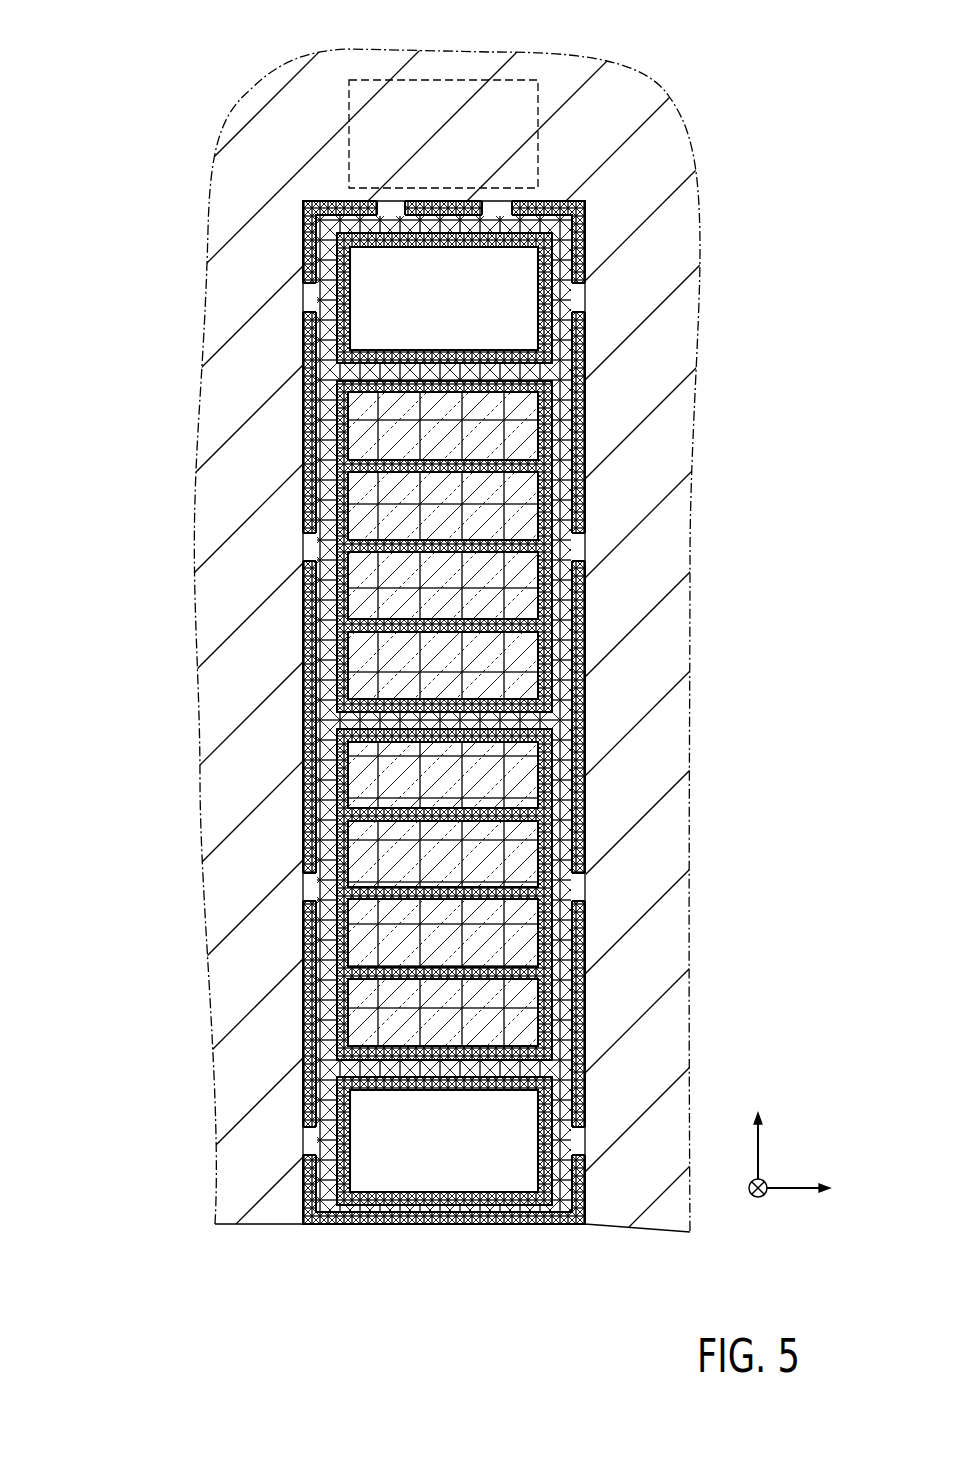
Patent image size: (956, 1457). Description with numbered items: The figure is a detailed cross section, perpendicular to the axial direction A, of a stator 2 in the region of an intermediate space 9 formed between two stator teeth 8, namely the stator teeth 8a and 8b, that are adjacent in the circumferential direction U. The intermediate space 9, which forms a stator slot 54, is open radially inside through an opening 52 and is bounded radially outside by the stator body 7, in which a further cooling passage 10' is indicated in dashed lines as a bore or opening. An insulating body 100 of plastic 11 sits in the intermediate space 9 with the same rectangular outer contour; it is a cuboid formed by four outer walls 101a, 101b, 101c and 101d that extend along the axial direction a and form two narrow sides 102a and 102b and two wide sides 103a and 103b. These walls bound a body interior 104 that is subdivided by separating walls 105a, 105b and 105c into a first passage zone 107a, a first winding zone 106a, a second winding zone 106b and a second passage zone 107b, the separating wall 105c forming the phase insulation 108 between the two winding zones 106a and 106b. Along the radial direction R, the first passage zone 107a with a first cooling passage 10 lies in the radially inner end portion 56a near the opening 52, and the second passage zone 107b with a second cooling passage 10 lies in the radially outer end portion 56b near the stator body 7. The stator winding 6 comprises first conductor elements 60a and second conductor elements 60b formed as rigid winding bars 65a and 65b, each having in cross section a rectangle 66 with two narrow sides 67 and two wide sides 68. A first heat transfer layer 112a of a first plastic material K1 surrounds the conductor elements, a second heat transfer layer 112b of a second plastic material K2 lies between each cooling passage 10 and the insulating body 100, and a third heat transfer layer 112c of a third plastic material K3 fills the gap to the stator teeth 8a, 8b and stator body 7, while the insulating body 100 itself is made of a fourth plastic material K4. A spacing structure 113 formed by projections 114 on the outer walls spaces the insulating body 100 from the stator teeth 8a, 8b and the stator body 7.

The stator 2 is at (656, 128).
The stator body 7 is at (519, 638).
The further cooling passage 10' is at (443, 96).
The cooling passage 10 is at (444, 719).
The stator winding 6 is at (484, 380).
The stator teeth 8 is at (446, 640).
The stator tooth 8a is at (446, 640).
The stator tooth 8b is at (196, 647).
The intermediate space 9 is at (452, 1293).
The stator slot 54 is at (345, 1238).
The opening 52 is at (395, 1226).
The radially inner end portion 56a is at (262, 1181).
The radially outer end portion 56b is at (262, 250).
The first conductor elements 60a is at (444, 894).
The winding bar 65a is at (486, 789).
The second conductor elements 60b is at (444, 546).
The winding bar 65b is at (486, 439).
The rectangle 66 is at (560, 406).
The narrow sides 67 is at (303, 424).
The wide sides 68 is at (398, 358).
The insulating body 100 is at (469, 781).
The plastic 11 is at (469, 781).
The fourth plastic material K4 is at (533, 1236).
The third plastic material K3 is at (303, 207).
The second plastic material K2 is at (303, 325).
The first plastic material K1 is at (303, 580).
The outer wall 101a is at (444, 1261).
The narrow side 102a is at (438, 1226).
The outer wall 101b is at (444, 163).
The narrow side 102b is at (440, 203).
The outer wall 101c is at (195, 1014).
The wide side 103a is at (303, 996).
The outer wall 101d is at (691, 1014).
The wide side 103b is at (585, 996).
The body interior 104 is at (585, 676).
The first separating wall 105a is at (392, 1080).
The second separating wall 105b is at (452, 358).
The separating wall 105c is at (563, 713).
The phase insulation 108 is at (548, 713).
The first winding zone 106a is at (560, 888).
The second winding zone 106b is at (560, 547).
The first passage zone 107a is at (560, 1143).
The second passage zone 107b is at (585, 297).
The first heat transfer layer 112a is at (183, 717).
The second heat transfer layer 112b is at (183, 719).
The third heat transfer layer 112c is at (322, 197).
The spacing structure 113 is at (598, 315).
The projections 114 is at (385, 203).
The radial direction R is at (782, 1192).
The circumferential direction U is at (782, 1192).
The axial direction A is at (782, 1192).
The axial direction a is at (760, 1150).